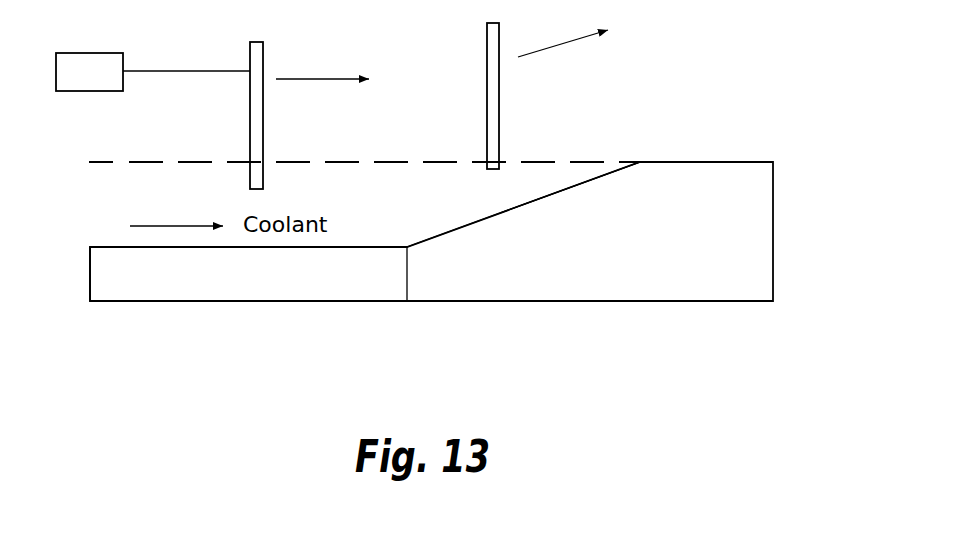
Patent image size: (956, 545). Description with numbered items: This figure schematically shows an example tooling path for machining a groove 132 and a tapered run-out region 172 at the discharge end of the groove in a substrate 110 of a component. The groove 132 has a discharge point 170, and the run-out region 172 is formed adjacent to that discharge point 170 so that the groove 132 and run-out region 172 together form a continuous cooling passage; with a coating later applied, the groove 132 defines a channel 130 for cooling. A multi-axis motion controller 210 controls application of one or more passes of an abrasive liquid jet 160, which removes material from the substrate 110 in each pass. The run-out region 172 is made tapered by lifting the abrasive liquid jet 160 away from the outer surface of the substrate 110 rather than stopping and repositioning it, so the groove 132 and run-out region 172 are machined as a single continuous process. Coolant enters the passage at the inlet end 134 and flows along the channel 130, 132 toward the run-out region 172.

The substrate 110 is at (682, 283).
The channel 130 is at (353, 230).
The groove 132 is at (248, 341).
The coolant inlet 134 is at (108, 246).
The abrasive liquid jet 160 is at (250, 44).
The discharge point 170 is at (408, 249).
The run-out region 172 is at (513, 188).
The multi-axis motion controller 210 is at (153, 72).